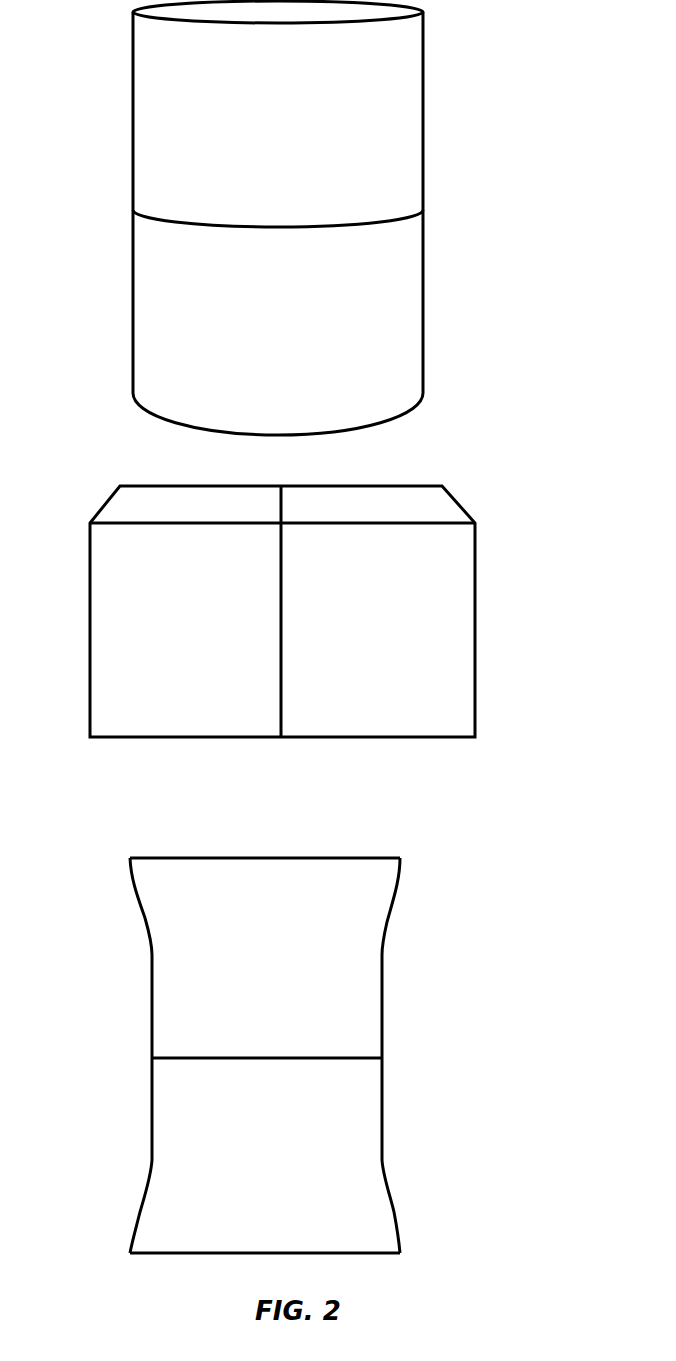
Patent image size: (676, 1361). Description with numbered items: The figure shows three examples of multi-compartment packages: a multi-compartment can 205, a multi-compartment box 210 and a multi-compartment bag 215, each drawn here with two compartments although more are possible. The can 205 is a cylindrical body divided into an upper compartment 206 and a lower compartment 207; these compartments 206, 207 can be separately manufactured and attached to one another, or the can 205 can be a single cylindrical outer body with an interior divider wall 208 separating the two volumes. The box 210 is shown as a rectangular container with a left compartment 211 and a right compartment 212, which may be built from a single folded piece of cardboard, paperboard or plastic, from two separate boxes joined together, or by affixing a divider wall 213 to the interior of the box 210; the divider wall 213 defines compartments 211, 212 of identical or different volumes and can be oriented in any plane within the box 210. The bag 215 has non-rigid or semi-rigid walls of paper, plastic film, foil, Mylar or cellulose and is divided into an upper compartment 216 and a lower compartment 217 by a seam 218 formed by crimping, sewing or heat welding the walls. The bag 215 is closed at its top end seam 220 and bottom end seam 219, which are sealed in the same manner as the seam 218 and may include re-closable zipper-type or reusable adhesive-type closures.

The multi-compartment can 205 is at (282, 218).
The compartment 206 is at (278, 105).
The compartment 207 is at (278, 322).
The interior divider wall 208 is at (164, 222).
The multi-compartment box 210 is at (333, 631).
The compartment 211 is at (185, 611).
The compartment 212 is at (378, 611).
The divider wall 213 is at (281, 705).
The multi-compartment bag 215 is at (306, 1052).
The compartment 216 is at (265, 958).
The compartment 217 is at (265, 1155).
The seam 218 is at (347, 1057).
The bottom end seam 219 is at (379, 1256).
The top end seam 220 is at (327, 857).